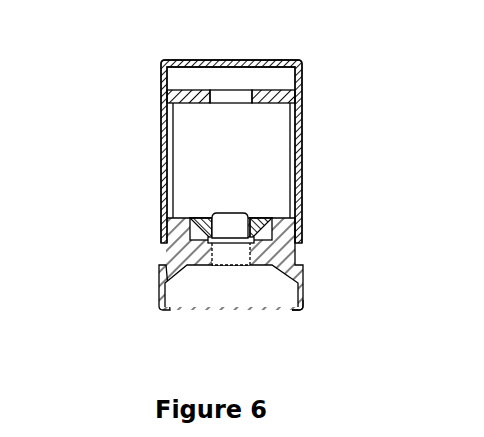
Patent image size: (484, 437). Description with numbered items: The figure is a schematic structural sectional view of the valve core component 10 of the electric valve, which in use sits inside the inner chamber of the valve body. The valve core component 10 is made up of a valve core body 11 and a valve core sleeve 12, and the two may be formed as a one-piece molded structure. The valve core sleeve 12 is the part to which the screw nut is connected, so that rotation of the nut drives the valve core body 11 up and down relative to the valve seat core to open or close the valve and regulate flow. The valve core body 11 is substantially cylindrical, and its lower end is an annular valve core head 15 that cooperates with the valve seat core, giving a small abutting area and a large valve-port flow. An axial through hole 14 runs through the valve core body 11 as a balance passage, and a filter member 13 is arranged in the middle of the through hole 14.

The valve core component 10 is at (222, 185).
The valve core body 11 is at (322, 247).
The valve core sleeve 12 is at (318, 176).
The filter member 13 is at (210, 196).
The through hole 14 is at (202, 240).
The valve core head 15 is at (314, 326).